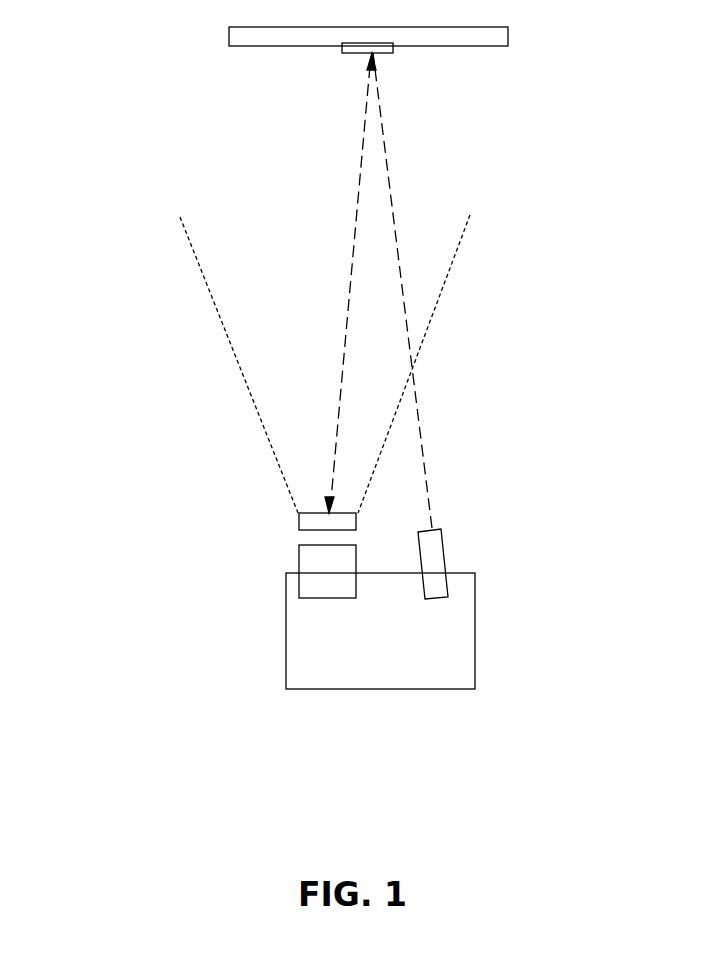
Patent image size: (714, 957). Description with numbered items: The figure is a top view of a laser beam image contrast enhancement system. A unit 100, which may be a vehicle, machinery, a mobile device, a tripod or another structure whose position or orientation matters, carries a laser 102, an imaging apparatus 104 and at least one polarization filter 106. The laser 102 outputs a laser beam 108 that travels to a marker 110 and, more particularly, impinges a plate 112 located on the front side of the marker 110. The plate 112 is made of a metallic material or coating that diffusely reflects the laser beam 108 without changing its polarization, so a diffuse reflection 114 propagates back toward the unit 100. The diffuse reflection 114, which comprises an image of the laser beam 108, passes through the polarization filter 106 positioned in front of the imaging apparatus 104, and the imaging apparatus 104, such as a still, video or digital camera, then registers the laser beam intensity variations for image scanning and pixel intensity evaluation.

The unit 100 is at (405, 652).
The laser 102 is at (443, 556).
The imaging apparatus 104 is at (299, 562).
The polarization filter 106 is at (299, 521).
The laser beam 108 is at (387, 178).
The marker 110 is at (229, 46).
The plate 112 is at (393, 48).
The diffuse reflection 114 is at (350, 265).